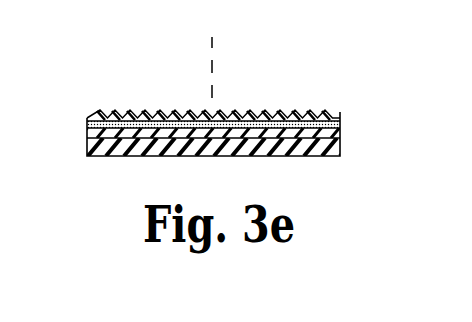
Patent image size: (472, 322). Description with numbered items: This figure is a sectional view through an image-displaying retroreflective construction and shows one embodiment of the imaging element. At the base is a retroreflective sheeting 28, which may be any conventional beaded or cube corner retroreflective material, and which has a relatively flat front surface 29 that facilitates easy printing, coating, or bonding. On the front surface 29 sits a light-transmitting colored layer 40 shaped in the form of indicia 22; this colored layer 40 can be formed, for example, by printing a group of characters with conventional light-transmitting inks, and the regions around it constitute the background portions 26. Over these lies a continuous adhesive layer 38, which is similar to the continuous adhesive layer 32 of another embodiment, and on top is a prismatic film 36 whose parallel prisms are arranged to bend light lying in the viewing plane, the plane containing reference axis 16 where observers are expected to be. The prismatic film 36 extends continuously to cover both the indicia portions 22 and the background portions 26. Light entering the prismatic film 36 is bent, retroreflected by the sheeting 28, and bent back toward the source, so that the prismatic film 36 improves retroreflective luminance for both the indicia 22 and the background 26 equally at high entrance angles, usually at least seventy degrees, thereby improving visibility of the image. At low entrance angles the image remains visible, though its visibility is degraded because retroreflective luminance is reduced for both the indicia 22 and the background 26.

The reference axis 16 is at (213, 68).
The indicia 22 is at (275, 92).
The background portions 26 is at (103, 115).
The retroreflective sheeting 28 is at (121, 148).
The front surface 29 is at (100, 130).
The adhesive layer 32 is at (146, 108).
The prismatic film 36 is at (304, 108).
The continuous adhesive layer 38 is at (338, 132).
The light-transmitting colored layer 40 is at (253, 132).